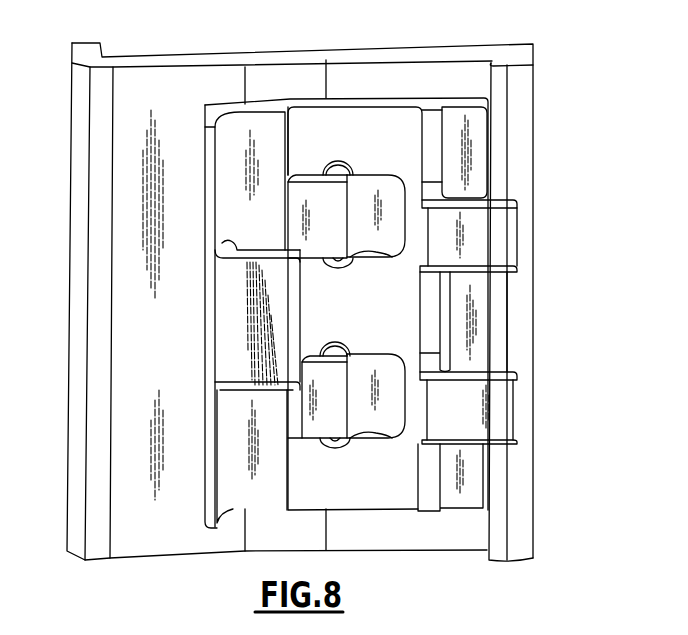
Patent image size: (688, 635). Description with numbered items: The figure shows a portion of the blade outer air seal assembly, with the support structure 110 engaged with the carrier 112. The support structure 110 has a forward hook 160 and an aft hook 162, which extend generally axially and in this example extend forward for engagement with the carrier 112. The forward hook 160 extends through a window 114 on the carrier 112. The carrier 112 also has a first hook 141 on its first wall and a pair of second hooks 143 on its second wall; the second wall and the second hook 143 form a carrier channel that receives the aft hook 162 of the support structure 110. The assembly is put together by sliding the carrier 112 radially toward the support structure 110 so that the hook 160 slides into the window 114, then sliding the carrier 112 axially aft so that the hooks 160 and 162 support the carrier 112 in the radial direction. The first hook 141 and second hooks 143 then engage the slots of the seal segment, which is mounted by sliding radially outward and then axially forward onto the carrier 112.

The support structure 110 is at (164, 88).
The carrier 112 is at (368, 123).
The windows 114 is at (383, 353).
The first hook 141 is at (245, 337).
The second hooks 143 is at (483, 232).
The forward hook 160 is at (322, 203).
The aft hook 162 is at (477, 305).